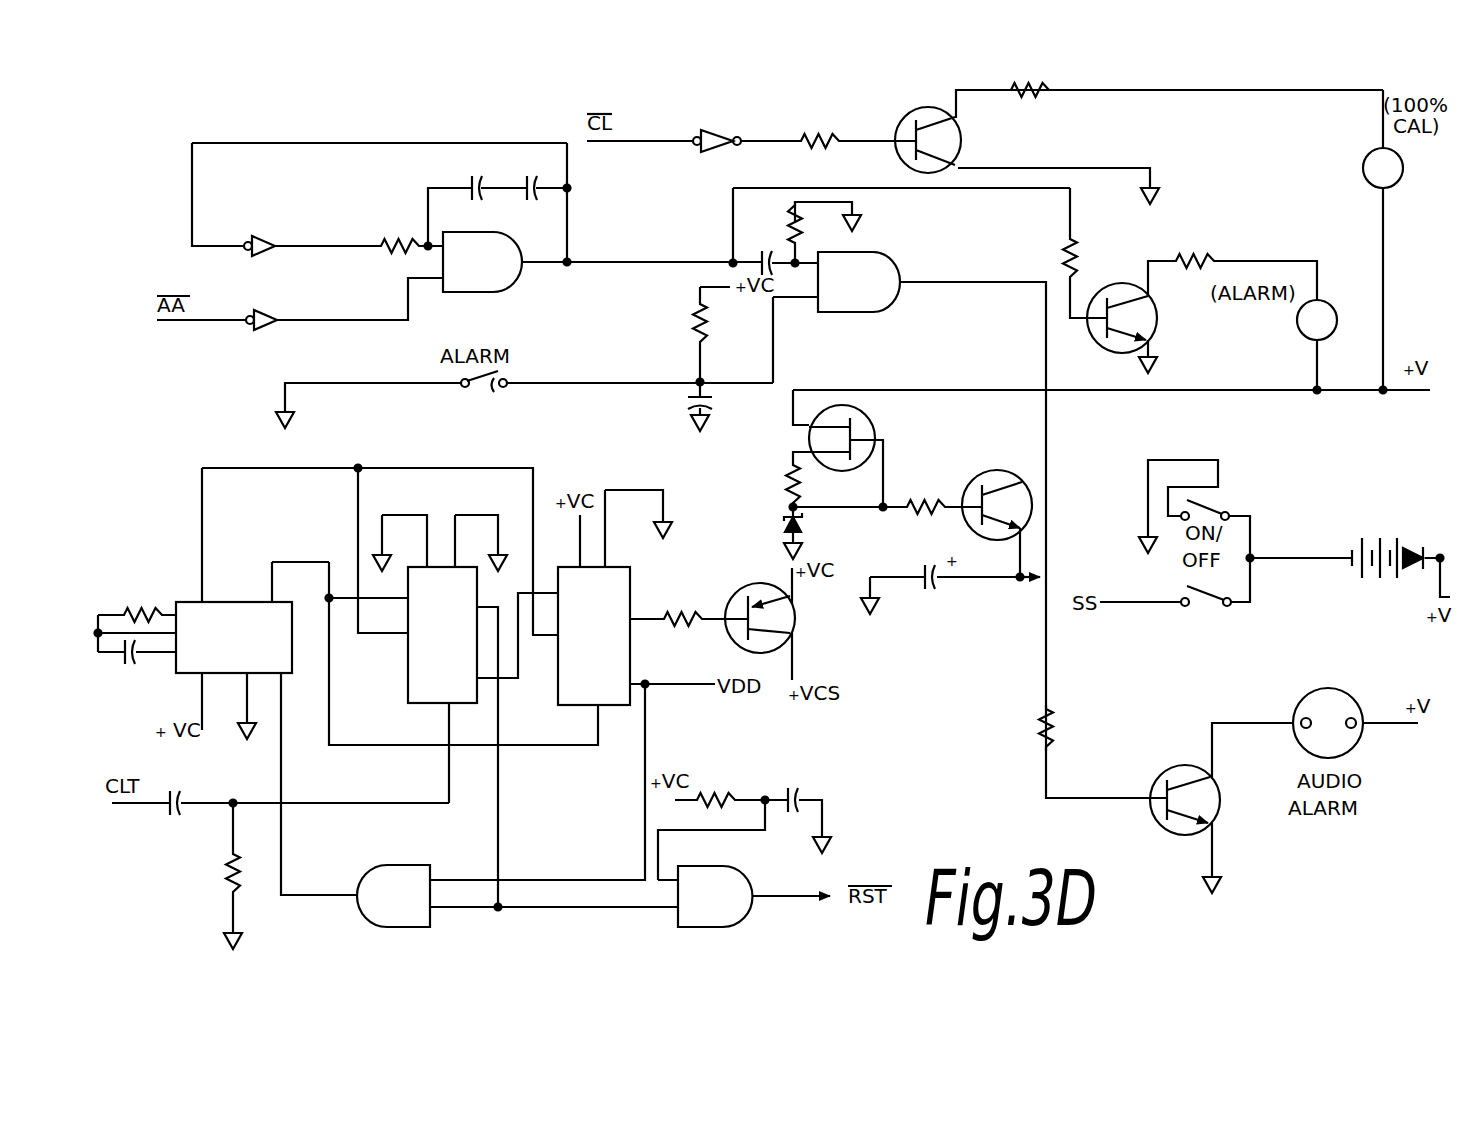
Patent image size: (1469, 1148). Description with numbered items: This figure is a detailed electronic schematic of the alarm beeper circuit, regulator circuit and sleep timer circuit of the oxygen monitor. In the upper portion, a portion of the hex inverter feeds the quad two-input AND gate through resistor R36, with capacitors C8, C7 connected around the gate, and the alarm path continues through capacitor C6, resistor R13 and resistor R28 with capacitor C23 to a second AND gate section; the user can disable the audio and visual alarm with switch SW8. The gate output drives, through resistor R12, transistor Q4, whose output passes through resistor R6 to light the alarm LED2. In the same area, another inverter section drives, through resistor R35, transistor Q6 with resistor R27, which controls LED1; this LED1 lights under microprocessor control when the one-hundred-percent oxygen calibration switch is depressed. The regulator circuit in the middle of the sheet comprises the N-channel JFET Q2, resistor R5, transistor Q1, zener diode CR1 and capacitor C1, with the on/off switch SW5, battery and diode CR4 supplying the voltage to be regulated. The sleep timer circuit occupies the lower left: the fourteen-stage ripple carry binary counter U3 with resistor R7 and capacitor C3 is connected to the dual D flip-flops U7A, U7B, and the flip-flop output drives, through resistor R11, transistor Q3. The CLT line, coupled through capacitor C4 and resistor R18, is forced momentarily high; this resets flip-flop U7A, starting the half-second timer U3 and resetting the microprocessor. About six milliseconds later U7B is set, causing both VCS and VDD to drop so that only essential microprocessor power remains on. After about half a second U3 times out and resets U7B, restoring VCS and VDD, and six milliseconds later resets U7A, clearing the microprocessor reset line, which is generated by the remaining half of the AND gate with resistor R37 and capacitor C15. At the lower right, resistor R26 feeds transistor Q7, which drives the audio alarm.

The resistor R36 is at (400, 233).
The capacitor C8 is at (476, 178).
The capacitor C7 is at (531, 178).
The switch SW8 is at (487, 395).
The resistor R35 is at (819, 128).
The transistor Q6 is at (915, 130).
The resistor R27 is at (1030, 102).
The capacitor C6 is at (770, 246).
The resistor R13 is at (813, 224).
The resistor R28 is at (722, 323).
The capacitor C23 is at (724, 403).
The LED LED1 is at (1399, 191).
The resistor R12 is at (1093, 257).
The transistor Q4 is at (1137, 318).
The resistor R6 is at (1195, 252).
The alarm LED LED2 is at (1331, 345).
The JFET-N channel Q2 is at (856, 434).
The resistor R5 is at (926, 494).
The transistor Q1 is at (997, 492).
The zener diode CR1 is at (818, 526).
The capacitor C1 is at (928, 590).
The transistor Q3 is at (776, 618).
The resistor R11 is at (677, 605).
The on/off switch SW5 is at (1205, 503).
The diode CR4 is at (1424, 539).
The 14 stage ripple carry binary counter U3 is at (234, 637).
The resistor R7 is at (143, 604).
The capacitor C3 is at (128, 668).
The dual D flip-flop U7A is at (442, 635).
The dual D flip-flop U7B is at (594, 636).
The capacitor C4 is at (168, 785).
The resistor R18 is at (209, 873).
The resistor R37 is at (718, 811).
The capacitor C15 is at (793, 787).
The resistor R26 is at (1068, 728).
The transistor Q7 is at (1185, 816).